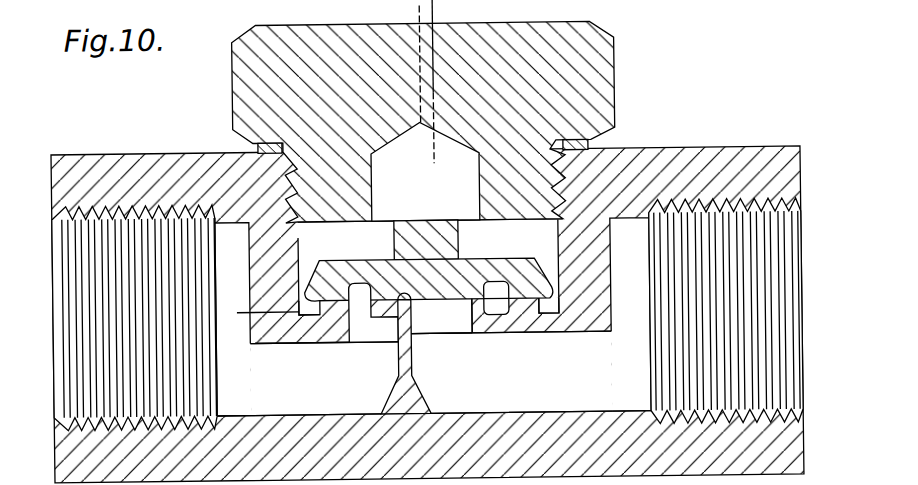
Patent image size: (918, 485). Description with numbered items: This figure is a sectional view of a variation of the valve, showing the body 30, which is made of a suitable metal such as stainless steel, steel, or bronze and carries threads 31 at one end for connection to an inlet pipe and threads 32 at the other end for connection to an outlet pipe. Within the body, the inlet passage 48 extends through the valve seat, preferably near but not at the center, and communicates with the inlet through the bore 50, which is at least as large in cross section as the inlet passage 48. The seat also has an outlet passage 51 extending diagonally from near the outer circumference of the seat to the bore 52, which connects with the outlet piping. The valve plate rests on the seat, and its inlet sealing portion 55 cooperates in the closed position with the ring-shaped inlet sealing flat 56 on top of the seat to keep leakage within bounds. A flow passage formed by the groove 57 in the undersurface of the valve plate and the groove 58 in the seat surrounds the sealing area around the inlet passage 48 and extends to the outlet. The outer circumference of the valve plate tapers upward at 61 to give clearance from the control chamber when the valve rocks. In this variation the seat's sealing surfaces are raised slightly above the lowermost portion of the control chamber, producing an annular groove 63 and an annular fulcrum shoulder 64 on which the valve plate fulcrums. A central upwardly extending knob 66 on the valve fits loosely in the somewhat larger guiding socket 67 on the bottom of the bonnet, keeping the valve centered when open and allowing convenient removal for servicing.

The body 30 is at (654, 159).
The threads 31 is at (724, 179).
The threads 32 is at (134, 305).
The inlet passage 48 is at (470, 323).
The bore 50 is at (546, 396).
The outlet passage 51 is at (353, 340).
The bore 52 is at (307, 401).
The inlet sealing portion 55 is at (414, 353).
The inlet sealing flat 56 is at (480, 305).
The groove 57 is at (495, 290).
The groove 58 is at (498, 320).
The upward taper of the valve plate 61 is at (307, 266).
The annular groove 63 is at (547, 314).
The annular fulcrum shoulder 64 is at (281, 346).
The knob 66 is at (403, 237).
The guiding socket 67 is at (477, 181).